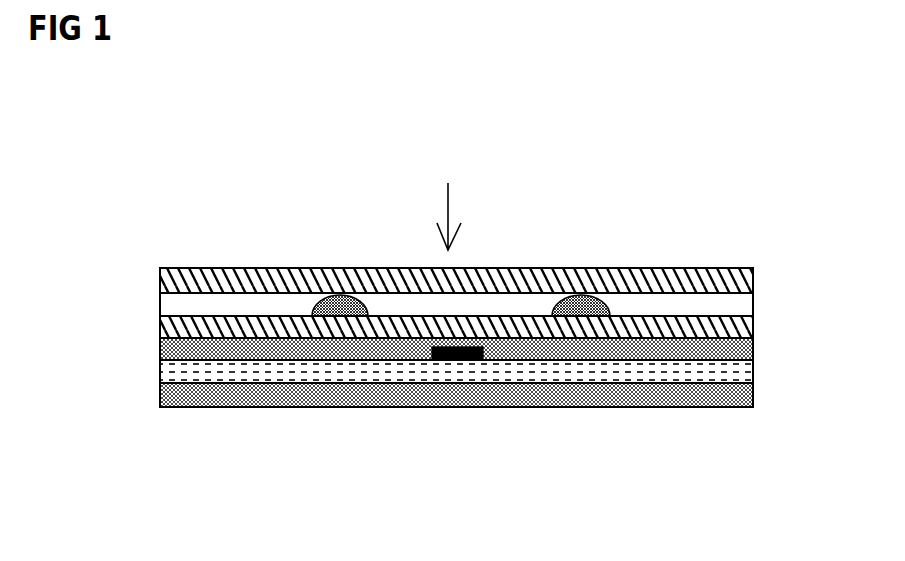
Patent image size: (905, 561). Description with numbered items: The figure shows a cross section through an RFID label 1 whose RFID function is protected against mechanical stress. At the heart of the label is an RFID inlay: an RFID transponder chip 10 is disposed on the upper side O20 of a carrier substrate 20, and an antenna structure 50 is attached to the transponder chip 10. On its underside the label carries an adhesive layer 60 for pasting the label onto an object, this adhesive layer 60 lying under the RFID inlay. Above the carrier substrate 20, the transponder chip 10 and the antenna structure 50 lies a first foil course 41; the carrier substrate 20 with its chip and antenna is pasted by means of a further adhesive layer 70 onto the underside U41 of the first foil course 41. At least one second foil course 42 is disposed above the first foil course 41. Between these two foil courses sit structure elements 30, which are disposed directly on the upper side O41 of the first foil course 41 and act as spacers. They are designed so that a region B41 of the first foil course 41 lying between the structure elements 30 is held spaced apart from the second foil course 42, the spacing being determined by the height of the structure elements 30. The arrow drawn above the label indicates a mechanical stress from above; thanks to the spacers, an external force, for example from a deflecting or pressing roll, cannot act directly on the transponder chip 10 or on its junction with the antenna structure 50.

The RFID label 1 is at (604, 177).
The RFID transponder chip 10 is at (446, 360).
The carrier substrate 20 is at (297, 370).
The upper side of the carrier substrate O20 is at (571, 362).
The structure elements 30 is at (318, 268).
The first foil course 41 is at (755, 330).
The region of the first foil course B41 is at (425, 314).
The upper side of the first foil course O41 is at (652, 315).
The underside of the first foil course U41 is at (355, 317).
The second foil course 42 is at (753, 277).
The antenna structure 50 is at (502, 362).
The adhesive layer 60 is at (670, 393).
The adhesive layer 70 is at (235, 343).